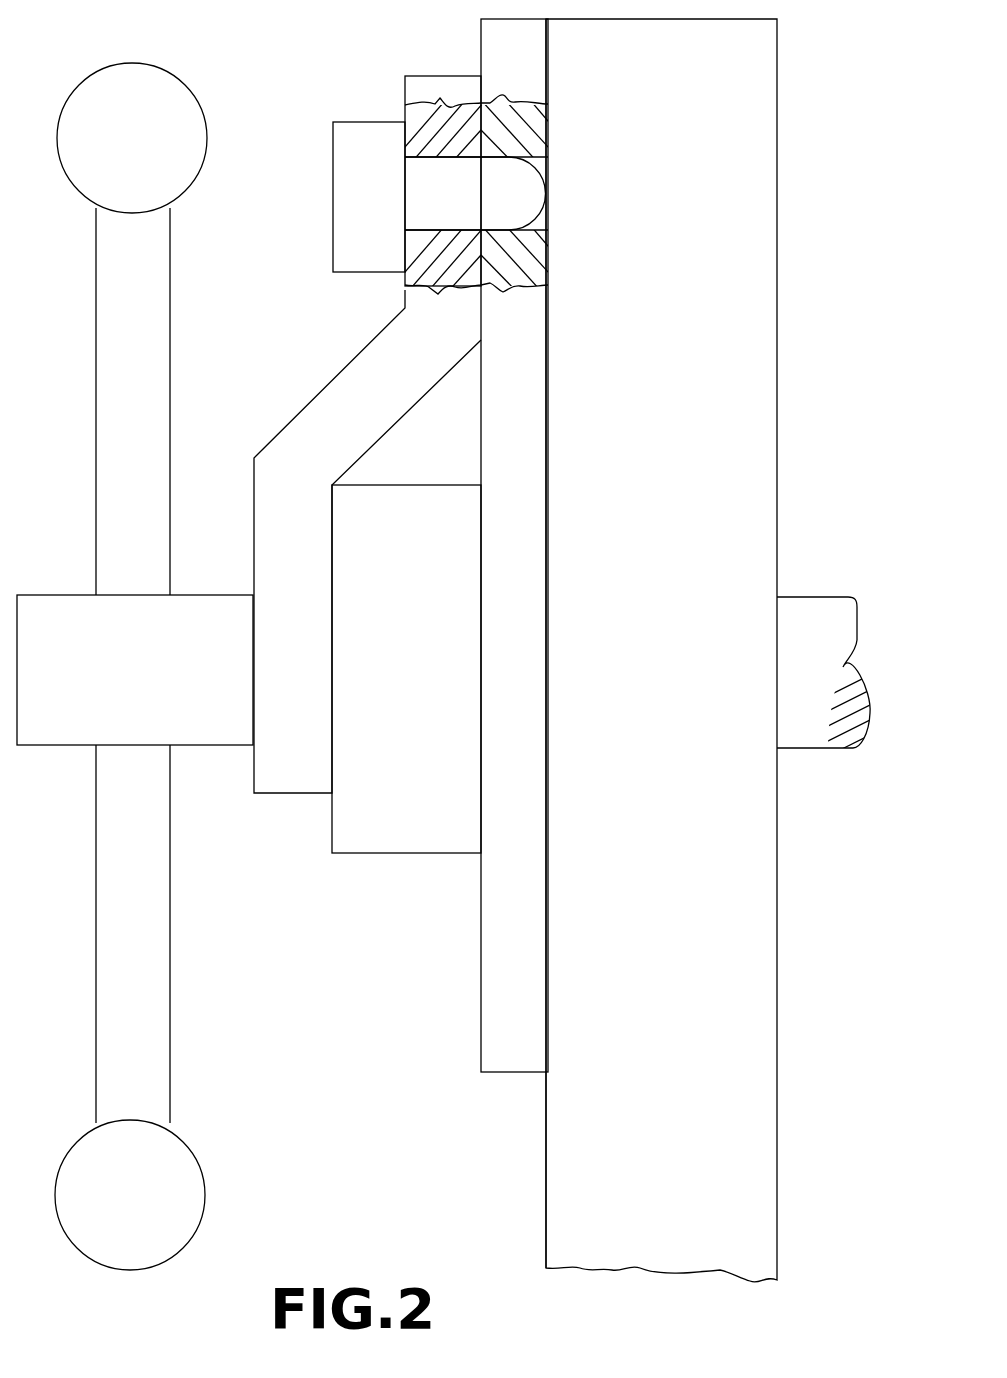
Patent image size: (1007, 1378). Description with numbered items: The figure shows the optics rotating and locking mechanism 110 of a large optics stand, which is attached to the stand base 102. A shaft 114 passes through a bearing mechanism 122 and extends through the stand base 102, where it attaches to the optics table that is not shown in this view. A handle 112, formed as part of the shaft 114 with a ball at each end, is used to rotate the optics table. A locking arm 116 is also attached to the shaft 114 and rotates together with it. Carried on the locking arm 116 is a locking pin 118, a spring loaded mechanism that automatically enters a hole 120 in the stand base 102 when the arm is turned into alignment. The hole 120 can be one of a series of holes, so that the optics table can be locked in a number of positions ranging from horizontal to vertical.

The stand base 102 is at (706, 1098).
The optics rotating and locking mechanism 110 is at (328, 50).
The handle 112 is at (170, 1021).
The shaft 114 is at (138, 678).
The locking arm 116 is at (313, 404).
The locking pin 118 is at (333, 222).
The hole 120 is at (538, 222).
The bearing mechanism 122 is at (424, 620).